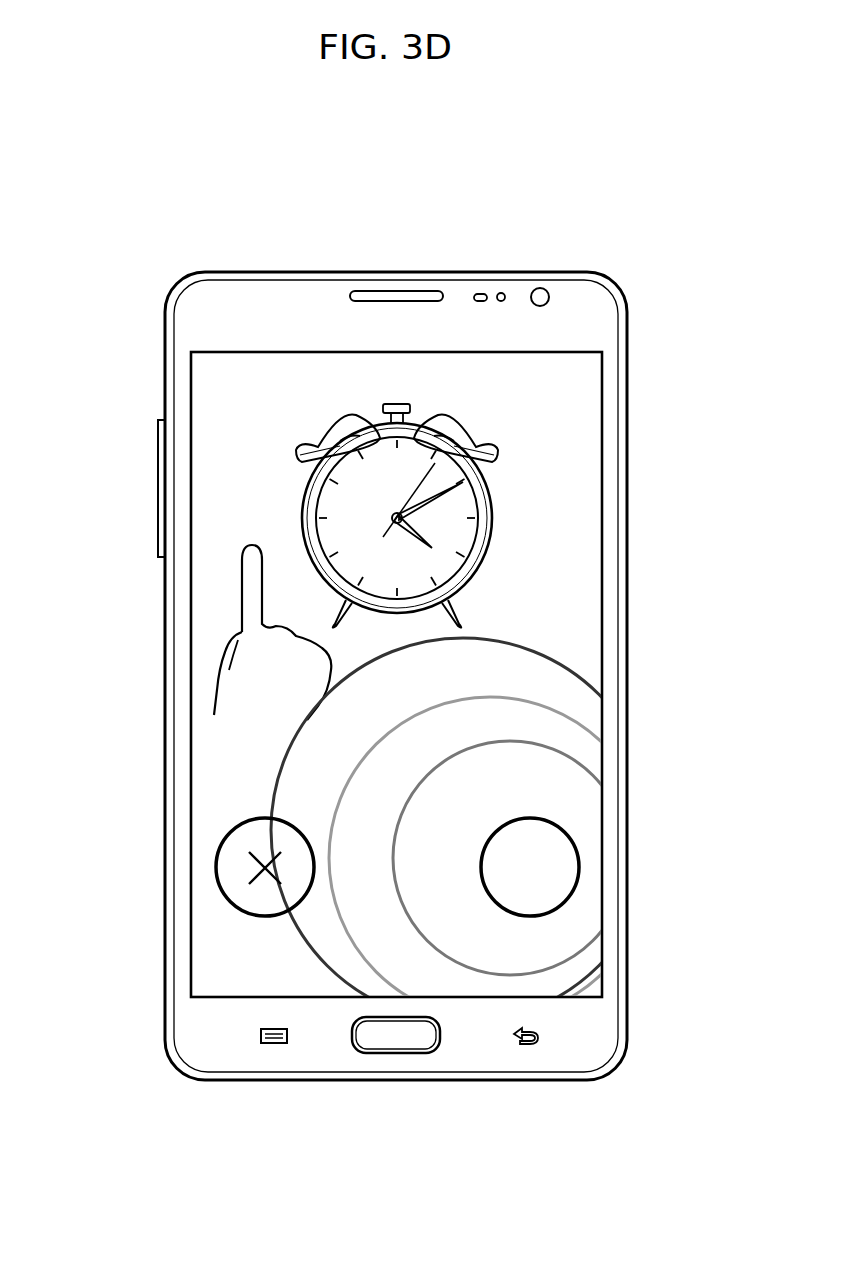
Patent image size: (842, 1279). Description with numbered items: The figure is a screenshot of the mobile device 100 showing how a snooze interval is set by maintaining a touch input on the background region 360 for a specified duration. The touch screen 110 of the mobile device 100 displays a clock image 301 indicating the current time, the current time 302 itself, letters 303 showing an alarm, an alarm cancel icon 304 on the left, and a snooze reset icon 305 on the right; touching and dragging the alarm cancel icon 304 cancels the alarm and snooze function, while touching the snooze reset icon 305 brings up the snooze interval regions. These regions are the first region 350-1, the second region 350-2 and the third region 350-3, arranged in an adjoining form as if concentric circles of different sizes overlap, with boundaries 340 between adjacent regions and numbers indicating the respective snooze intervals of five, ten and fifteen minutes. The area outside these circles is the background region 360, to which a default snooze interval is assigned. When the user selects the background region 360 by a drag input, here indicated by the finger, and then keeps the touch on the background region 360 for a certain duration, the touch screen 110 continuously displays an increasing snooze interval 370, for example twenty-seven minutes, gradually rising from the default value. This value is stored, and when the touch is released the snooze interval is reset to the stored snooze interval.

The mobile device 100 is at (523, 270).
The touch screen 110 is at (212, 955).
The clock image 301 is at (322, 413).
The current time 302 is at (437, 675).
The letters showing an alarm 303 is at (373, 750).
The alarm cancel icon 304 is at (215, 866).
The snooze reset icon 305 is at (582, 868).
The boundaries 340 is at (415, 933).
The first region 350-1 is at (582, 800).
The second region 350-2 is at (582, 755).
The third region 350-3 is at (582, 714).
The background region 360 is at (560, 405).
The increasing snooze interval 370 is at (582, 508).